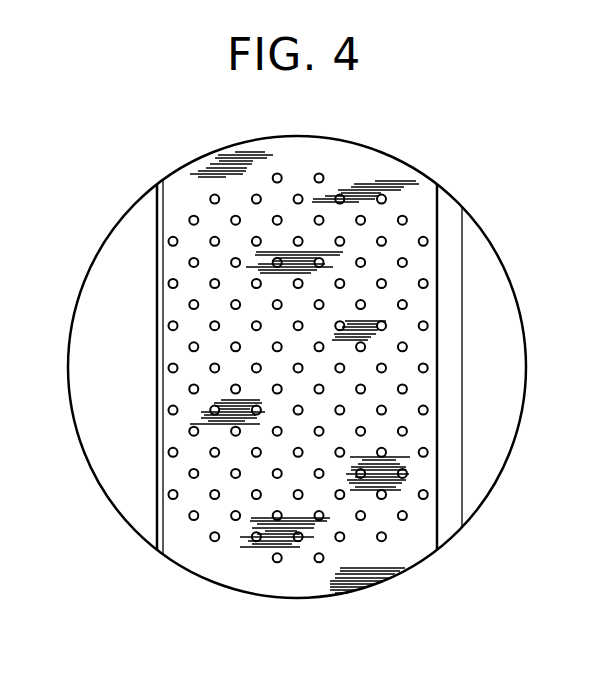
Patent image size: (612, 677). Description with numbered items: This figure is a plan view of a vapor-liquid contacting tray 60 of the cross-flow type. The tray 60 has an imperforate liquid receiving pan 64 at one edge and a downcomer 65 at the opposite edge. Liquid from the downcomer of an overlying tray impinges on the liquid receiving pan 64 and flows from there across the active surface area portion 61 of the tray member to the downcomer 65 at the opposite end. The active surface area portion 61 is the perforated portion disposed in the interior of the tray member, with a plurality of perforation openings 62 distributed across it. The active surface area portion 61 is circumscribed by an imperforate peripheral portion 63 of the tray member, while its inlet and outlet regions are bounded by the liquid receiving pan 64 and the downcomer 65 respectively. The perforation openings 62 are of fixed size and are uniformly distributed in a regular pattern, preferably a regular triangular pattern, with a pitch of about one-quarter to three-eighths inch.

The tray 60 is at (434, 178).
The active surface area portion 61 is at (224, 530).
The perforation opening 62 is at (297, 543).
The imperforate peripheral portion 63 is at (407, 557).
The imperforate liquid receiving pan 64 is at (100, 287).
The downcomer 65 is at (497, 292).